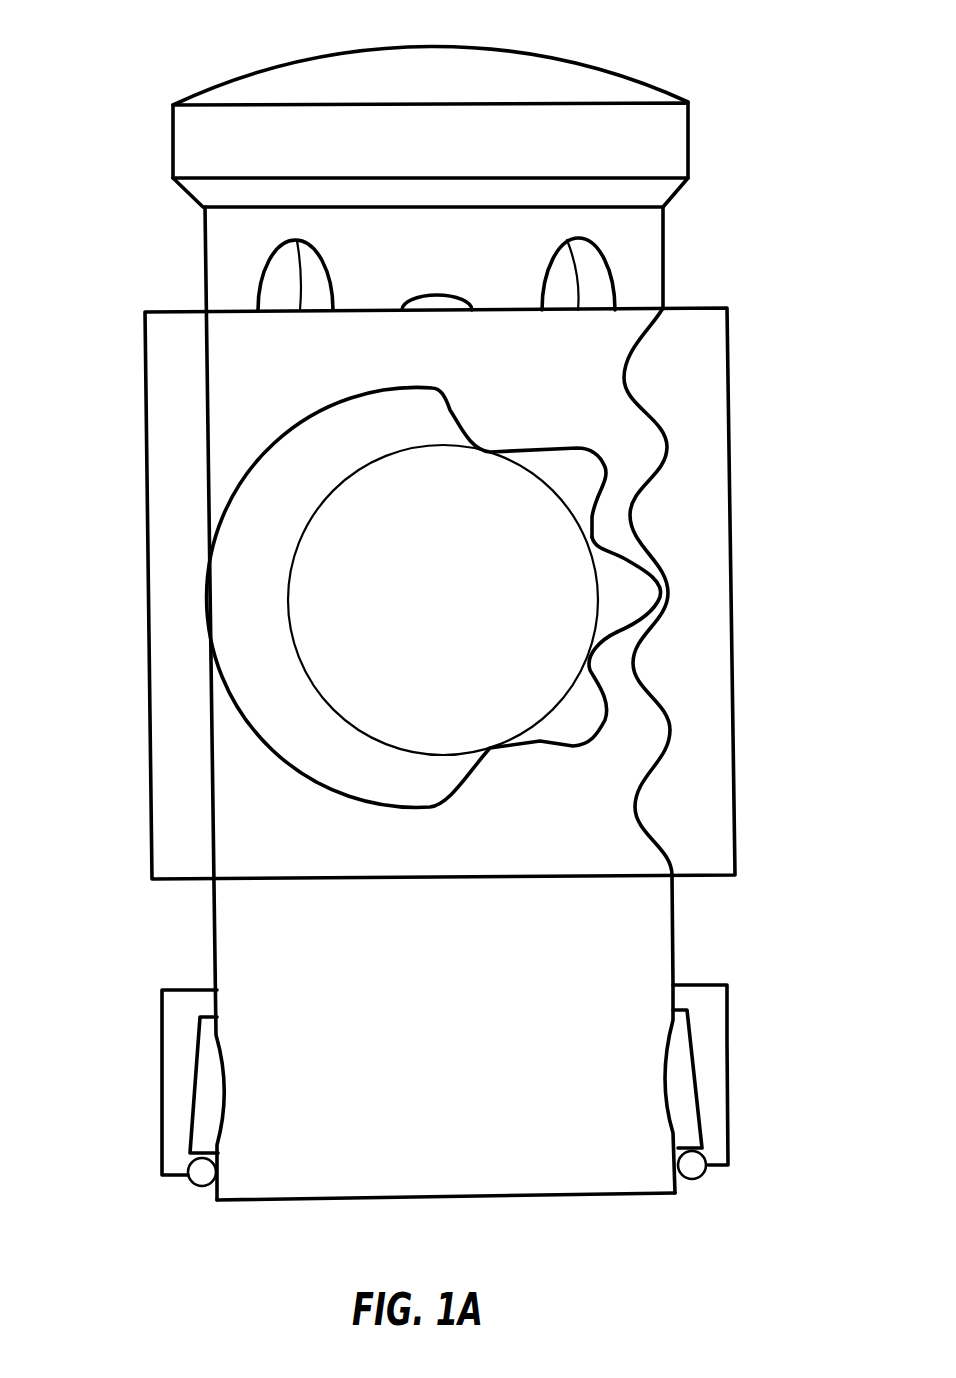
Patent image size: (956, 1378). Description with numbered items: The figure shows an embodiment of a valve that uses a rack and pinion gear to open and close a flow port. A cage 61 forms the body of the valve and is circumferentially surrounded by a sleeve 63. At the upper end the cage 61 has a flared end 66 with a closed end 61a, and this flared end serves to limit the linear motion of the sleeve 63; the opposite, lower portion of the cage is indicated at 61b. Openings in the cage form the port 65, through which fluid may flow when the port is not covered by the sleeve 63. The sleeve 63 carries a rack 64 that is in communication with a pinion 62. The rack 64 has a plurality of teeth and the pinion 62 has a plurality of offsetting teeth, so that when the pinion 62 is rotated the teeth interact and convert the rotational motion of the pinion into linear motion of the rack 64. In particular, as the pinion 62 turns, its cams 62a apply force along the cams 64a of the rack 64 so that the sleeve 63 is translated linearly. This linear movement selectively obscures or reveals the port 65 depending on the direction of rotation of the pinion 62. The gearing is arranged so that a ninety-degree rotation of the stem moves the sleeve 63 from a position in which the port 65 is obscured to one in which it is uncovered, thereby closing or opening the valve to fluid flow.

The cage 61 is at (215, 948).
The closed end 61a is at (368, 57).
The bottom portion 61b is at (372, 1200).
The pinion 62 is at (375, 508).
The cams 62a is at (628, 593).
The sleeve 63 is at (158, 398).
The rack 64 is at (710, 475).
The cams 64a is at (635, 807).
The port 65 is at (582, 289).
The flared end 66 is at (683, 162).